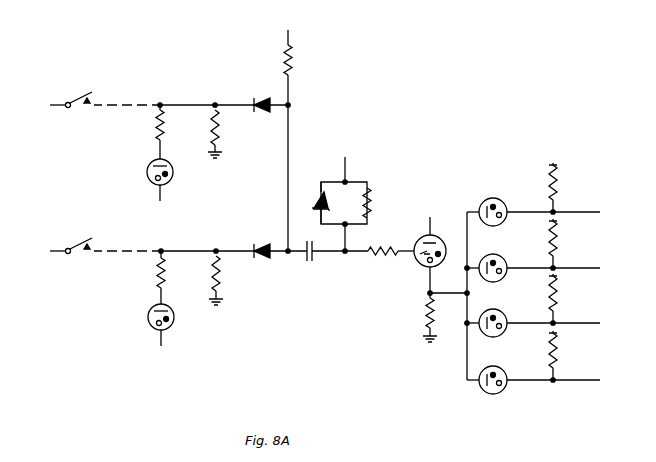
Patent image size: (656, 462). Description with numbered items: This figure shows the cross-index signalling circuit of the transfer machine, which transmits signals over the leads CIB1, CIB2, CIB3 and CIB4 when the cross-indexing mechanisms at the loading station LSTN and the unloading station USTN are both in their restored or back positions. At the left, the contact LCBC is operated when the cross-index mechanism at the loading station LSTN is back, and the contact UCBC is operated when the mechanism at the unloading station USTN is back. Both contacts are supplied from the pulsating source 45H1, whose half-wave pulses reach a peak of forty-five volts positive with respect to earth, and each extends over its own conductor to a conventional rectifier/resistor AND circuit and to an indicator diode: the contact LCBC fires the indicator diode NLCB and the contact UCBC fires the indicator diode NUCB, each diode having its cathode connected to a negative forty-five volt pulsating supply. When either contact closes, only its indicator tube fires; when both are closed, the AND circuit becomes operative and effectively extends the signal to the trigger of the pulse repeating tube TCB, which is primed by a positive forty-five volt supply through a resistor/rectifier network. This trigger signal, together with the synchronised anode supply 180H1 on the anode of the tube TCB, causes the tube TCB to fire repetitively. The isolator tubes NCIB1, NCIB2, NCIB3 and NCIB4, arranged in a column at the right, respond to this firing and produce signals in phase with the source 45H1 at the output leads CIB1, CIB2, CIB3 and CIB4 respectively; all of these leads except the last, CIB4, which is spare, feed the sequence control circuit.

The 45H1 supply 45H1 is at (99, 232).
The unloading station USTN is at (103, 87).
The unloading-station cross-index back contact UCBC is at (177, 128).
The indicator diode NUCB is at (177, 152).
The loading station LSTN is at (104, 265).
The loading-station cross-index back contact LCBC is at (187, 274).
The indicator diode NLCB is at (179, 296).
The pulse repeating tube TCB is at (376, 288).
The 180H1 anode supply 180H1 is at (431, 218).
The isolator tube NCIB4 is at (486, 205).
The cross-index signal lead CIB4 is at (570, 191).
The isolator tube NCIB3 is at (486, 261).
The cross-index signal lead CIB3 is at (570, 247).
The isolator tube NCIB2 is at (486, 316).
The cross-index signal lead CIB2 is at (570, 302).
The isolator tube NCIB1 is at (486, 373).
The cross-index signal lead CIB1 is at (570, 359).